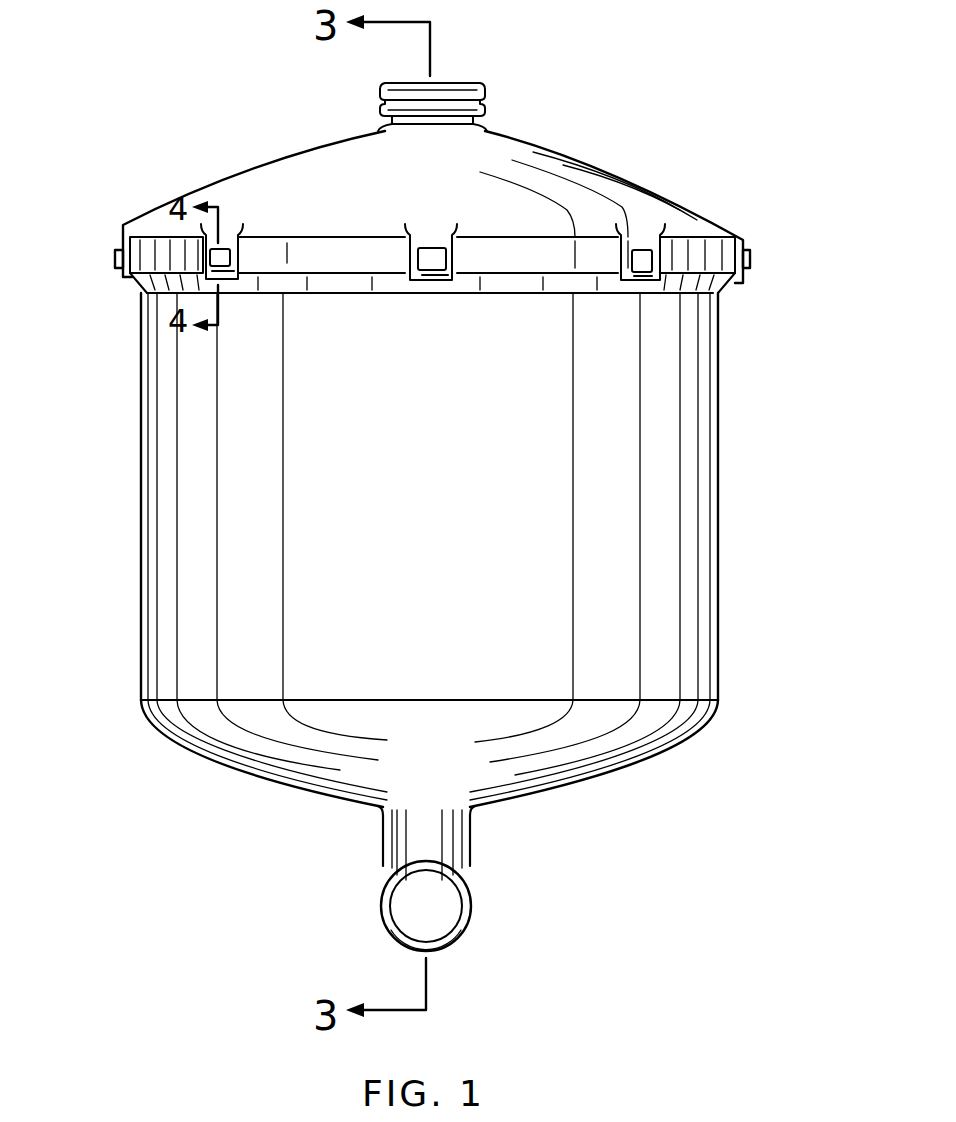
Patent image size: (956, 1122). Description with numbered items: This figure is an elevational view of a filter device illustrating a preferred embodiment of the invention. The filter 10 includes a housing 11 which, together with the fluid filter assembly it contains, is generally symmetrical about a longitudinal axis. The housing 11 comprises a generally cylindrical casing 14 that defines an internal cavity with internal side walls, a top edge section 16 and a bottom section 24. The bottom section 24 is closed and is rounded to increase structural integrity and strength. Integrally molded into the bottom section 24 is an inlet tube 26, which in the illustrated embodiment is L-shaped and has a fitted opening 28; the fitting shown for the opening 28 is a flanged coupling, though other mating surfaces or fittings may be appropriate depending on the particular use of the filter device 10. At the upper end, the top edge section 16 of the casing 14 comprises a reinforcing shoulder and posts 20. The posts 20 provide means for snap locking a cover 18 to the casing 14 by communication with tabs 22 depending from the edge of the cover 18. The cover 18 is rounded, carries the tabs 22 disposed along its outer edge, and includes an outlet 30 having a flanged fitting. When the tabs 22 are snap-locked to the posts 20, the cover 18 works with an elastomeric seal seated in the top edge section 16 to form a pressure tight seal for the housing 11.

The filter 10 is at (128, 378).
The housing 11 is at (242, 613).
The cylindrical casing 14 is at (663, 448).
The top edge section 16 is at (160, 267).
The cover 18 is at (607, 155).
The posts 20 is at (650, 280).
The tabs 22 is at (650, 280).
The bottom section 24 is at (513, 777).
The inlet tube 26 is at (435, 843).
The fitted opening 28 is at (460, 916).
The outlet 30 is at (448, 82).